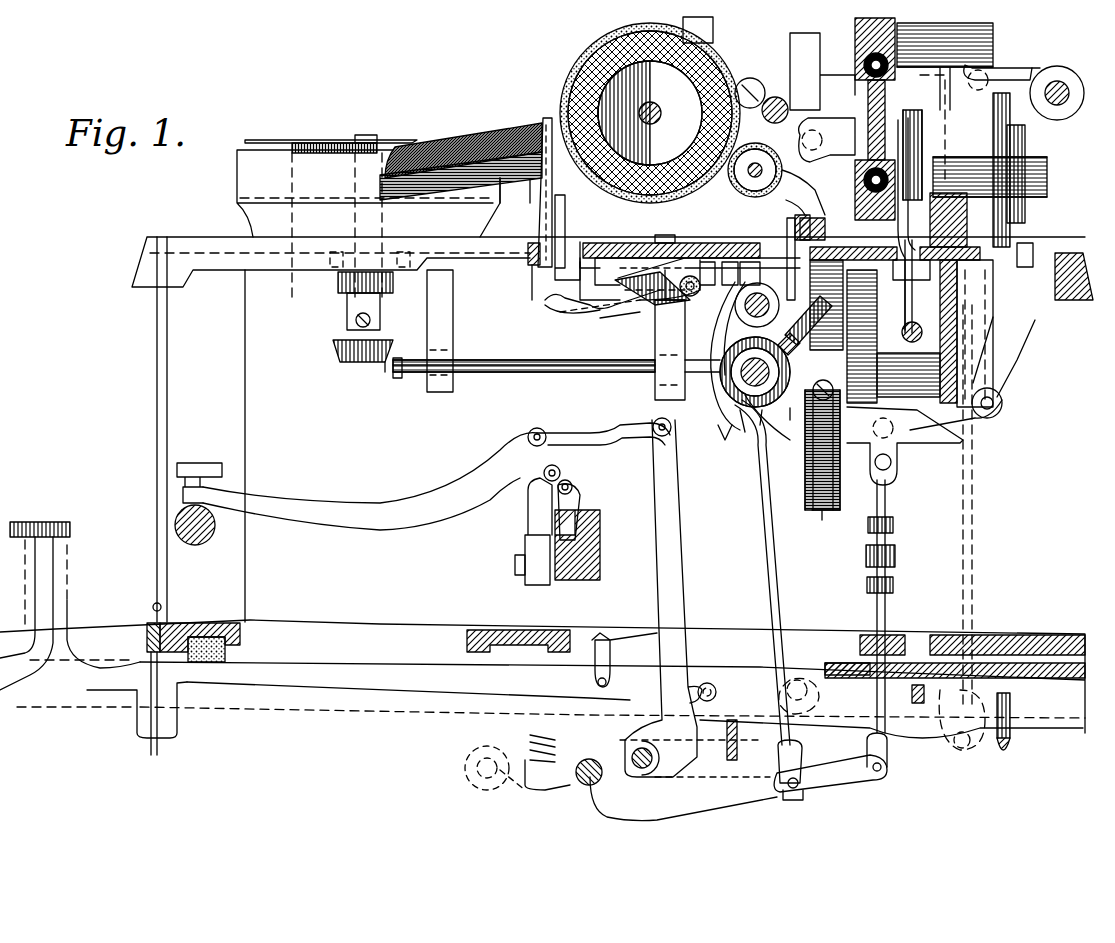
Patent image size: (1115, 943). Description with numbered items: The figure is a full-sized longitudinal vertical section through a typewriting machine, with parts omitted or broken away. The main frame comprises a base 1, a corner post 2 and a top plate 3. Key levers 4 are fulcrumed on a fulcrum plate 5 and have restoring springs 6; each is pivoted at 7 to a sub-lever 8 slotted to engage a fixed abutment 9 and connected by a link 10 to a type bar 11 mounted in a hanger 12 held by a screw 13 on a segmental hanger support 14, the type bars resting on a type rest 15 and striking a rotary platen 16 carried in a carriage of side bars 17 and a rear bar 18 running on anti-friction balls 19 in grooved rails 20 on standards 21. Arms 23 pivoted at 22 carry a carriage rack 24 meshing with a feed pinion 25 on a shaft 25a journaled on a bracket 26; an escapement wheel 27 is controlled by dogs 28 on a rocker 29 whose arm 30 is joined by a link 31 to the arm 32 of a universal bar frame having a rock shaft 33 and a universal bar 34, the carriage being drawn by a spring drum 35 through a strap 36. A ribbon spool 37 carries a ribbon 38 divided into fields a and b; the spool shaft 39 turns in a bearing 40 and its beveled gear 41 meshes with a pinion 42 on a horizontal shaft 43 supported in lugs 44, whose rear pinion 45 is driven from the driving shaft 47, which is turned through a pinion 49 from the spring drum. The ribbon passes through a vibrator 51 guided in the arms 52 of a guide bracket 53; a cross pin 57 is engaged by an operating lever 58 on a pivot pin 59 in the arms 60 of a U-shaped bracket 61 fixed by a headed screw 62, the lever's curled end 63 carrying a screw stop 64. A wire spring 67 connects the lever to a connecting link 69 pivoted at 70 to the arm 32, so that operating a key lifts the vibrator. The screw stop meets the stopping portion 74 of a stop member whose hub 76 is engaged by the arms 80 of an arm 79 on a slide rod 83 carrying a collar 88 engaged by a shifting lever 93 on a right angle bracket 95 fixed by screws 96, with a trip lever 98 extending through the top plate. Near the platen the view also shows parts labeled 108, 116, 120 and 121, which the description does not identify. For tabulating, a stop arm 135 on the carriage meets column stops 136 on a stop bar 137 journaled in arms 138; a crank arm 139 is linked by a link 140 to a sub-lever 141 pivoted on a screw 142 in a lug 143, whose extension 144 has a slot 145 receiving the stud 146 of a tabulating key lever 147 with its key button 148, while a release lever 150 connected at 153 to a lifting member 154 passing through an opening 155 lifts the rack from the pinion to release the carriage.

The base 1 is at (350, 630).
The corner post 2 is at (245, 420).
The top plate 3 is at (196, 240).
The key lever 4 is at (375, 672).
The fulcrum plate 5 is at (835, 663).
The restoring spring 6 is at (620, 640).
The pivot 7 is at (707, 682).
The sub-lever 8 is at (690, 578).
The fixed abutment 9 is at (630, 760).
The link 10 is at (610, 427).
The type bar 11 is at (427, 495).
The hanger 12 is at (533, 587).
The screw 13 is at (515, 566).
The segmental hanger support 14 is at (578, 580).
The type rest 15 is at (205, 537).
The rotary platen 16 is at (592, 82).
The side bar 17 is at (763, 73).
The rear bar 18 is at (866, 90).
The anti-friction ball 19 is at (864, 65).
The grooved rail 20 is at (856, 22).
The standard 21 is at (945, 66).
The pivot 22 is at (814, 130).
The arm 23 is at (831, 140).
The carriage rack 24 is at (910, 150).
The feed pinion 25 is at (930, 210).
The shaft 25a is at (947, 127).
The bracket 26 is at (1005, 160).
The escapement wheel 27 is at (1012, 190).
The escapement dog 28 is at (1025, 252).
The dog rocker 29 is at (1025, 355).
The arm 30 is at (917, 438).
The link 31 is at (886, 610).
The arm 32 is at (850, 778).
The rock shaft 33 is at (578, 780).
The universal bar 34 is at (746, 740).
The spring drum 35 is at (808, 490).
The band or strap 36 is at (822, 518).
The ribbon spool 37 is at (293, 146).
The ribbon 38 is at (456, 145).
The upright shaft 39 is at (372, 135).
The fixed bearing 40 is at (338, 285).
The beveled gear 41 is at (358, 362).
The beveled pinion 42 is at (395, 378).
The horizontal shaft 43 is at (508, 362).
The lug 44 is at (453, 322).
The beveled pinion 45 is at (717, 436).
The driving shaft 47 is at (742, 428).
The beveled pinion 49 is at (793, 419).
The ribbon vibrator 51 is at (568, 237).
The upright arm 52 is at (534, 240).
The guide bracket 53 is at (528, 262).
The cross pin 57 is at (545, 300).
The operating lever 58 is at (668, 300).
The pivot pin 59 is at (690, 296).
The arm 60 is at (640, 280).
The U-shaped bracket 61 is at (632, 258).
The headed screw 62 is at (665, 229).
The curled end 63 is at (875, 335).
The screw stop 64 is at (845, 325).
The wire spring 67 is at (630, 308).
The connecting link 69 is at (770, 545).
The pivot 70 is at (793, 800).
The cylindrical stopping portion 74 is at (772, 421).
The hub portion 76 is at (755, 440).
The arm 79 is at (700, 345).
The bifurcation arm 80 is at (720, 395).
The slide rod 83 is at (735, 305).
The collar 88 is at (815, 292).
The shifting lever 93 is at (752, 262).
The right angle bracket 95 is at (707, 260).
The screw 96 is at (735, 262).
The trip lever 98 is at (787, 222).
The guard 108 is at (804, 192).
The block 116 is at (834, 229).
The roller 120 is at (770, 160).
The roller 121 is at (780, 105).
The stop arm 135 is at (1000, 68).
The column stop 136 is at (1042, 70).
The stop bar 137 is at (1070, 92).
The arm 138 is at (1040, 112).
The crank arm 139 is at (1030, 52).
The link 140 is at (972, 520).
The sub-lever 141 is at (930, 755).
The shouldered screw 142 is at (478, 785).
The lug 143 is at (508, 790).
The upward extension 144 is at (815, 700).
The slot 145 is at (825, 670).
The stud 146 is at (800, 675).
The tabulating key lever 147 is at (300, 712).
The key button 148 is at (70, 529).
The release lever 150 is at (912, 320).
The connection 153 is at (902, 332).
The lifting member 154 is at (895, 280).
The opening 155 is at (900, 245).
The ribbon field a is at (521, 188).
The ribbon field b is at (514, 176).